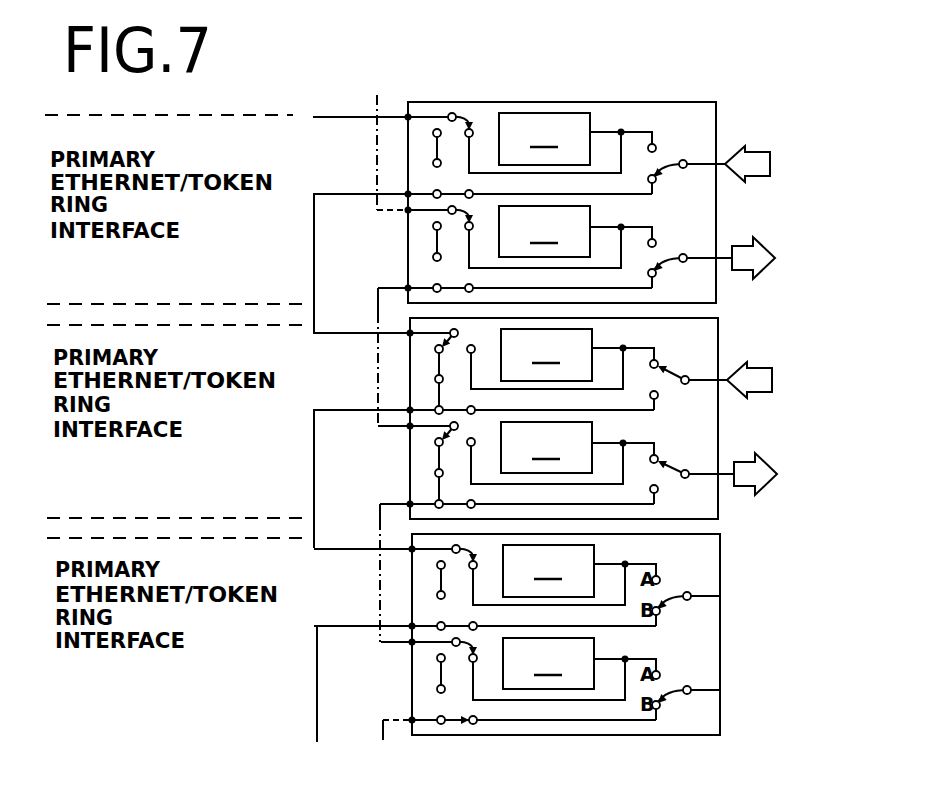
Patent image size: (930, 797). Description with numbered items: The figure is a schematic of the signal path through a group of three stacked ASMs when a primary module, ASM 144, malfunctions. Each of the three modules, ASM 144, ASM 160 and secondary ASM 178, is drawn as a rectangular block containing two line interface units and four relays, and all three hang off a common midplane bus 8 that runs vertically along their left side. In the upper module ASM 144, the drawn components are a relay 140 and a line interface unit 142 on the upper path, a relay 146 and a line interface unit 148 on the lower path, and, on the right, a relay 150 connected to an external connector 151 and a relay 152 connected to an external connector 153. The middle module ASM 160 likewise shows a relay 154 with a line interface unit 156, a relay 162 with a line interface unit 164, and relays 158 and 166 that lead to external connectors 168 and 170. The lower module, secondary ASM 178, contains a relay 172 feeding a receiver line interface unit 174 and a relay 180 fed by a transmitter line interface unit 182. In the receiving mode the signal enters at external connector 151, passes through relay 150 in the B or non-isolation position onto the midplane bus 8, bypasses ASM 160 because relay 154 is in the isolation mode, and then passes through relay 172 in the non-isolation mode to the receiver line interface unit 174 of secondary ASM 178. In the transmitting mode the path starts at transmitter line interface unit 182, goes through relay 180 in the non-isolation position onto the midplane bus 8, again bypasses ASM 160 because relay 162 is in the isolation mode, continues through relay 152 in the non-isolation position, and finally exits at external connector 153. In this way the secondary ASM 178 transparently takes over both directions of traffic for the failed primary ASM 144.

The midplane bus 8 is at (313, 117).
The input switch 140 is at (475, 119).
The interface module 142 is at (560, 143).
The ASM 144 is at (700, 189).
The input switch 146 is at (413, 215).
The interface module 148 is at (560, 237).
The relay 150 is at (680, 160).
The external connector 151 is at (792, 137).
The relay 152 is at (684, 256).
The external connector 153 is at (757, 270).
The relay 154 is at (402, 342).
The interface module 156 is at (562, 359).
The output switch 158 is at (682, 374).
The ASM 160 is at (612, 418).
The relay 162 is at (424, 461).
The interface module 164 is at (562, 453).
The output switch 166 is at (686, 458).
The input connection 168 is at (777, 370).
The output connection 170 is at (783, 469).
The relay 172 is at (404, 556).
The receiver line interface unit 174 is at (564, 575).
The secondary ASM 178 is at (604, 634).
The relay 180 is at (415, 639).
The transmitter line interface unit 182 is at (564, 669).